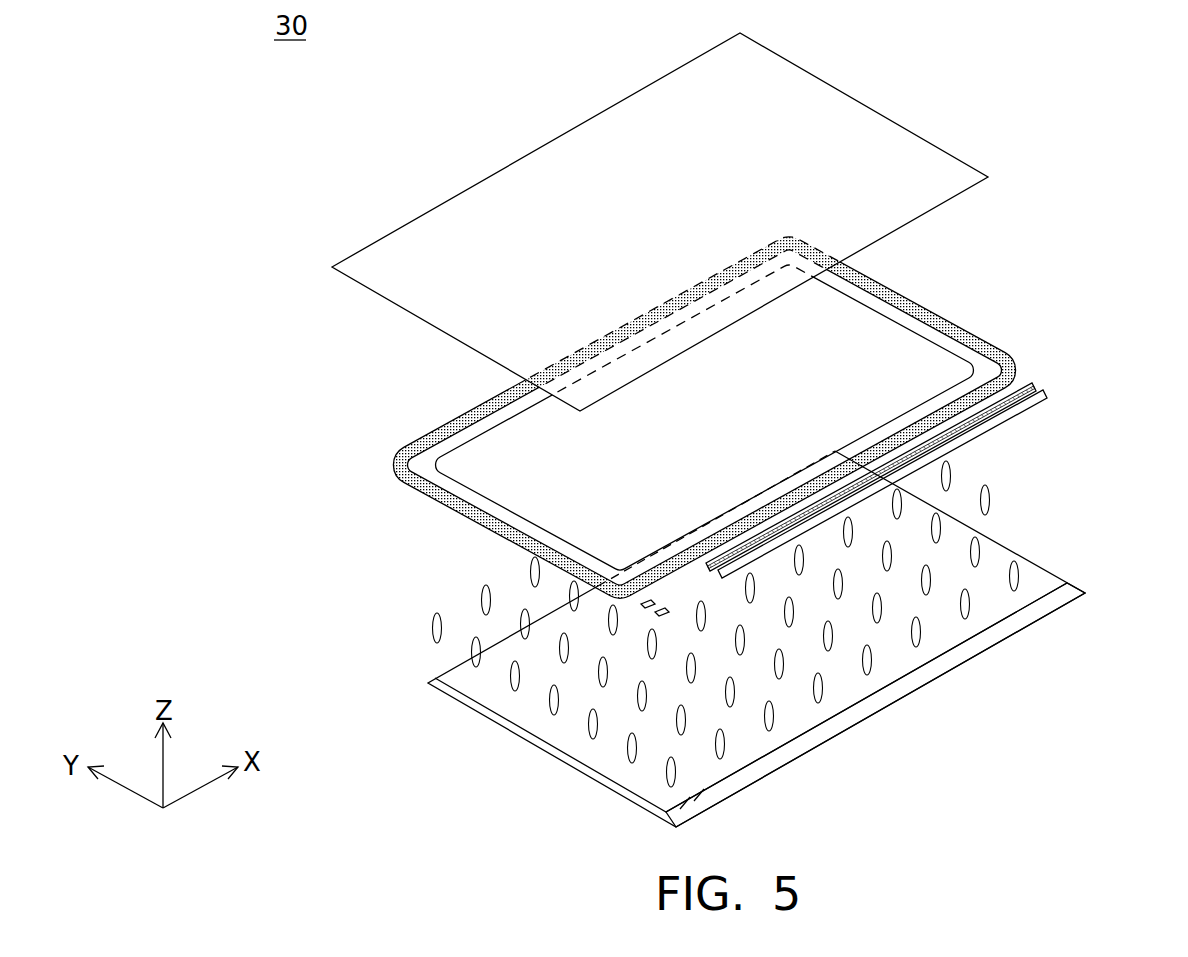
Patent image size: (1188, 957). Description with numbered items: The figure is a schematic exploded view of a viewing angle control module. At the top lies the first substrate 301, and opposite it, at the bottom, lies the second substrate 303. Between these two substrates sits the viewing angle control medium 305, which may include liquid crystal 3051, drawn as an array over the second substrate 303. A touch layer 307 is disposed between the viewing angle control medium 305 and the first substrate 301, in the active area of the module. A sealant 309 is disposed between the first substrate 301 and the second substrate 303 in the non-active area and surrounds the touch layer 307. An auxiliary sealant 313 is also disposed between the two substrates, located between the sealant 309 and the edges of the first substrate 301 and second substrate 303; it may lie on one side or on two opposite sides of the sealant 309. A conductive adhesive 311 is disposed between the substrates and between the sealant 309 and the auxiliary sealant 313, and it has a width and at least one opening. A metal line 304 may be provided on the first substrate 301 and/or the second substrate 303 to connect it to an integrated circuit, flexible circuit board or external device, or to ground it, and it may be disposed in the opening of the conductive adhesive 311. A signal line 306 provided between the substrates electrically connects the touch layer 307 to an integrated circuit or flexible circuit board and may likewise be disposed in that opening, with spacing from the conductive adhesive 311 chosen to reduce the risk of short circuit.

The first substrate 301 is at (820, 120).
The second substrate 303 is at (900, 653).
The metal line 304 is at (685, 810).
The viewing angle control medium 305 is at (773, 654).
The liquid crystal 3051 is at (963, 603).
The signal line 306 is at (713, 578).
The touch layer 307 is at (900, 343).
The sealant 309 is at (993, 348).
The conductive adhesive 311 is at (644, 605).
The auxiliary sealant 313 is at (658, 614).